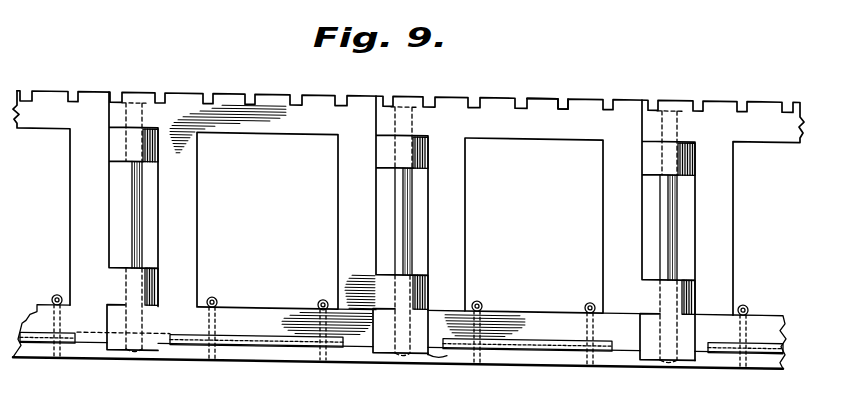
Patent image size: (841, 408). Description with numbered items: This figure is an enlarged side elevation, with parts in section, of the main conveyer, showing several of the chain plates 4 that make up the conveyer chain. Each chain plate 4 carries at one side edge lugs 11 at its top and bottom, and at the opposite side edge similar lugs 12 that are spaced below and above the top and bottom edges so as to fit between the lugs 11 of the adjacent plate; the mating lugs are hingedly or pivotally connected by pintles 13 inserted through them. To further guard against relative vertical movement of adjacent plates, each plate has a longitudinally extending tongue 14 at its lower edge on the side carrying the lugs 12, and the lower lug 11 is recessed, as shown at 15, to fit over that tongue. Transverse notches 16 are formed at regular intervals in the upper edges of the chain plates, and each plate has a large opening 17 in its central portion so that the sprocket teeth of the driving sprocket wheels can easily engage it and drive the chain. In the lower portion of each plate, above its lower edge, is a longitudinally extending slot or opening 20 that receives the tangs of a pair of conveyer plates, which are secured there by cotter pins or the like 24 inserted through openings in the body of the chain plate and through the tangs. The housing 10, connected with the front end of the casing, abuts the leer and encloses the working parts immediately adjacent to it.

The chain plate 4 is at (495, 106).
The housing 10 is at (20, 333).
The lug 11 is at (413, 109).
The lug 12 is at (417, 147).
The pintle 13 is at (400, 209).
The tongue 14 is at (417, 351).
The recess 15 is at (447, 351).
The transverse notch 16 is at (563, 95).
The opening 17 is at (400, 222).
The slot 20 is at (537, 332).
The cotter pin 24 is at (318, 297).